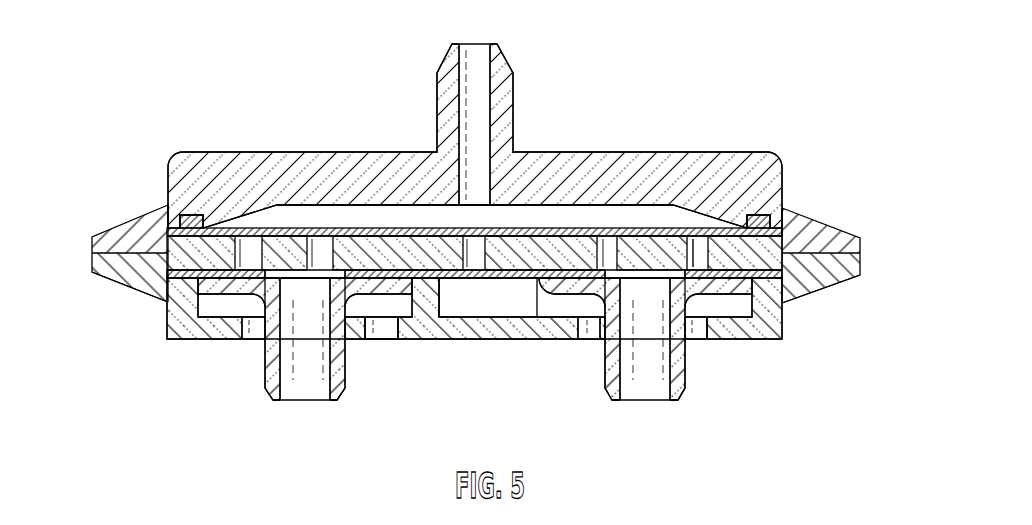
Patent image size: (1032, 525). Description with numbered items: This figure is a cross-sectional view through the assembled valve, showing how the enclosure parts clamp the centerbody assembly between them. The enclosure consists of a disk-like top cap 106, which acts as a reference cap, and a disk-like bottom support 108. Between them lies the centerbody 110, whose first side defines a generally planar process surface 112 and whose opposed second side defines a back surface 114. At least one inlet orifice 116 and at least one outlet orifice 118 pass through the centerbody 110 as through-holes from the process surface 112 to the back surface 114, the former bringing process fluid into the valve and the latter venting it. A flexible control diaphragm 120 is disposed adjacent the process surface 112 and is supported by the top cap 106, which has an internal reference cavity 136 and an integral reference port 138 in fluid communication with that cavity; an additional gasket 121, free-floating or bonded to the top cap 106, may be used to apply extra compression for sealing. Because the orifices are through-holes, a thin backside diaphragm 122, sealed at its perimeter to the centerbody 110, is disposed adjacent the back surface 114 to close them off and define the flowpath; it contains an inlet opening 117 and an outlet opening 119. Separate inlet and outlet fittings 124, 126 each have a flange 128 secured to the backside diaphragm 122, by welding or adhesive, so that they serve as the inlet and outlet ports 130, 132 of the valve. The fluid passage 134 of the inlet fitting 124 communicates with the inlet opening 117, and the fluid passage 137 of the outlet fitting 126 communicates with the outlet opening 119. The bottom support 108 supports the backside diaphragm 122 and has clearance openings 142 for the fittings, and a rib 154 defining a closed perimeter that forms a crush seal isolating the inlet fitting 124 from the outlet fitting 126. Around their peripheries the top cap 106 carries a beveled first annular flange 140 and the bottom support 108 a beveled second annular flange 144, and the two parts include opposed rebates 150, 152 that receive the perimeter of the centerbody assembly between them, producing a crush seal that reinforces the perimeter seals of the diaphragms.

The top cap 106 is at (625, 162).
The bottom support 108 is at (763, 330).
The centerbody 110 is at (773, 250).
The process surface 112 is at (523, 234).
The back surface 114 is at (503, 278).
The inlet orifice 116 is at (312, 248).
The inlet opening 117 is at (322, 280).
The outlet orifice 118 is at (694, 250).
The outlet opening 119 is at (603, 274).
The control diaphragm 120 is at (784, 230).
The gasket 121 is at (192, 215).
The backside diaphragm 122 is at (783, 303).
The inlet fitting 124 is at (270, 388).
The outlet fitting 126 is at (680, 378).
The flange 128 is at (220, 290).
The inlet port 130 is at (296, 410).
The outlet port 132 is at (638, 410).
The fluid passage 134 is at (332, 388).
The reference cavity 136 is at (335, 213).
The fluid passage 137 is at (675, 383).
The reference port 138 is at (500, 65).
The first annular flange 140 is at (100, 222).
The clearance opening 142 is at (372, 328).
The second annular flange 144 is at (100, 275).
The rebate 150 is at (170, 213).
The rebate 152 is at (172, 278).
The rib 154 is at (445, 297).